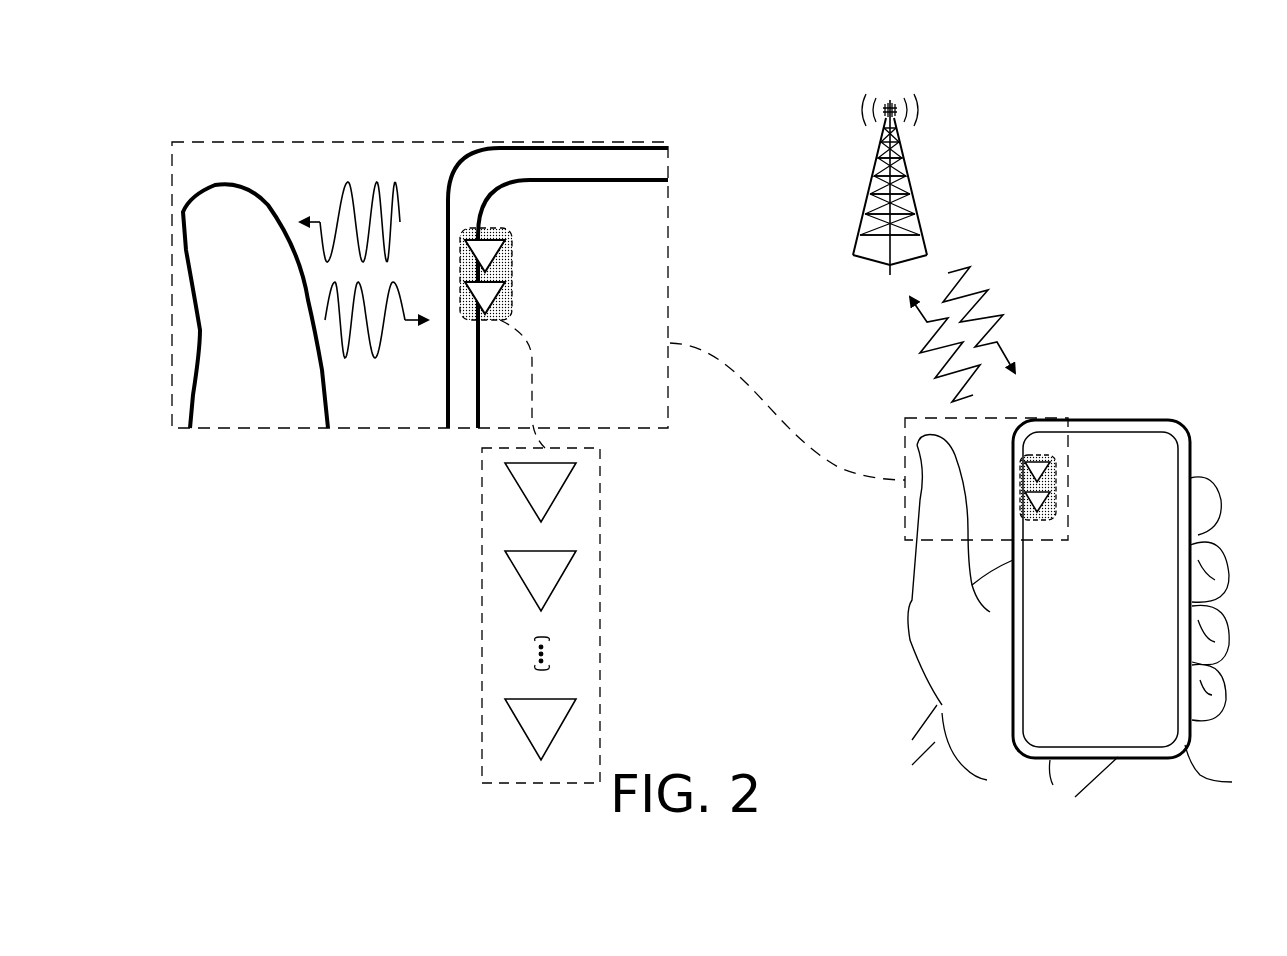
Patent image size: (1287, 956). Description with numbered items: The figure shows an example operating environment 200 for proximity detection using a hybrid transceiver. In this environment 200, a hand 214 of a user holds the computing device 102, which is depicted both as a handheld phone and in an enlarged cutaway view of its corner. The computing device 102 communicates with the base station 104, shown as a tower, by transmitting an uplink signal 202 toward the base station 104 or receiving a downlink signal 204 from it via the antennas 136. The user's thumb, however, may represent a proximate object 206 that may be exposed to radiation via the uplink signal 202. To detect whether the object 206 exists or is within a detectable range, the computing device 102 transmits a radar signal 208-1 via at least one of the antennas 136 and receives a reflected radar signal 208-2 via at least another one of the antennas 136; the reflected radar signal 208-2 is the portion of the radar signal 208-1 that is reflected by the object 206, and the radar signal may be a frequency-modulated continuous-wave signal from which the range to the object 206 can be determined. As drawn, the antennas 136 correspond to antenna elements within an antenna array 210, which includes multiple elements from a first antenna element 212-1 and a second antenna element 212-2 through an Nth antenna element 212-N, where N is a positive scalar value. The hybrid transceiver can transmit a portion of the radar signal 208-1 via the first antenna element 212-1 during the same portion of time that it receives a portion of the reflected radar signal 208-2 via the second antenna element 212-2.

The operating environment 200 is at (1190, 116).
The computing device 102 is at (448, 400).
The base station 104 is at (902, 200).
The antennas 136 is at (508, 260).
The uplink signal 202 is at (903, 354).
The downlink signal 204 is at (1018, 290).
The object 206 is at (241, 342).
The radar signal 208-1 is at (380, 170).
The reflected radar signal 208-2 is at (370, 385).
The antenna array 210 is at (603, 548).
The first antenna element 212-1 is at (521, 493).
The second antenna element 212-2 is at (521, 574).
The Nth antenna element 212-N is at (521, 728).
The hand 214 is at (878, 603).